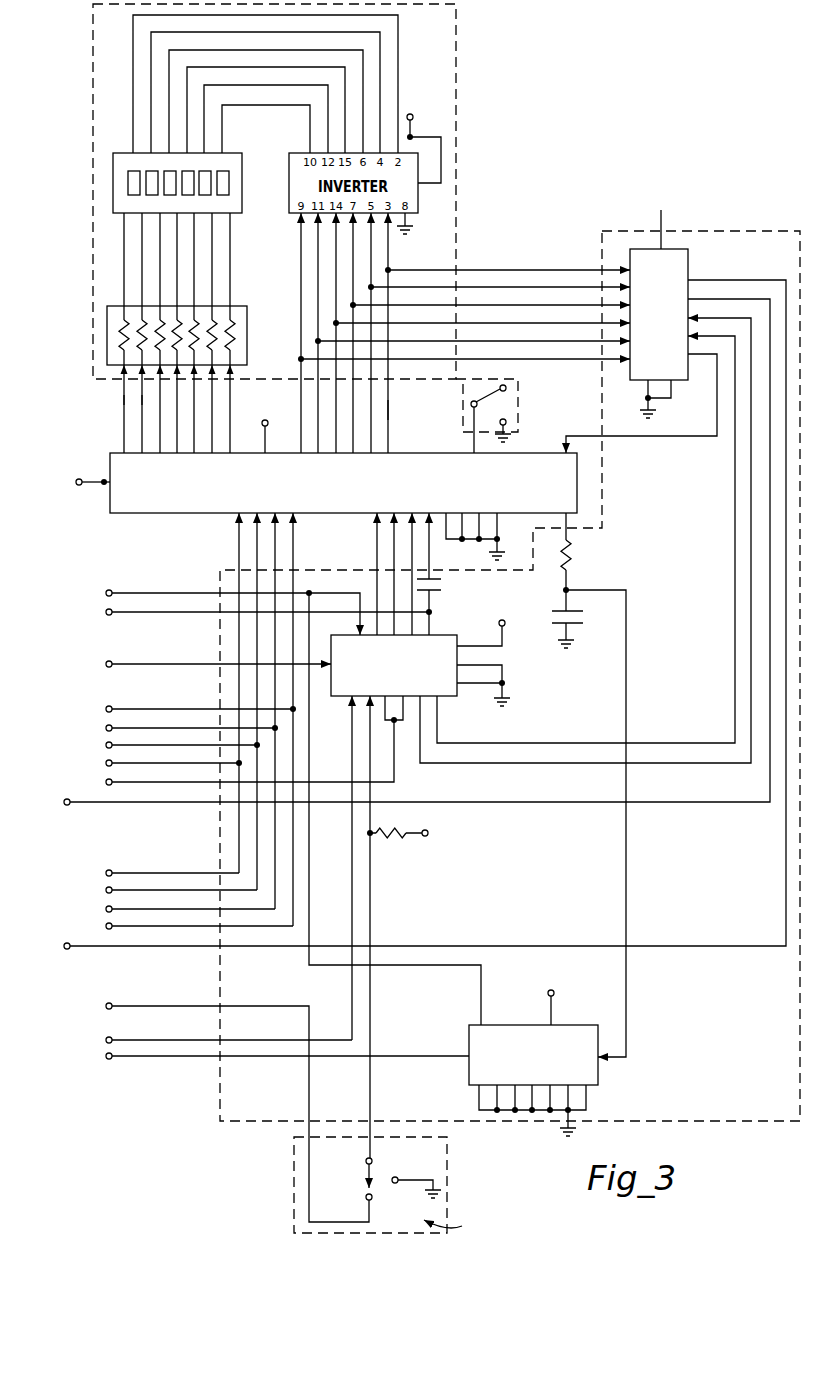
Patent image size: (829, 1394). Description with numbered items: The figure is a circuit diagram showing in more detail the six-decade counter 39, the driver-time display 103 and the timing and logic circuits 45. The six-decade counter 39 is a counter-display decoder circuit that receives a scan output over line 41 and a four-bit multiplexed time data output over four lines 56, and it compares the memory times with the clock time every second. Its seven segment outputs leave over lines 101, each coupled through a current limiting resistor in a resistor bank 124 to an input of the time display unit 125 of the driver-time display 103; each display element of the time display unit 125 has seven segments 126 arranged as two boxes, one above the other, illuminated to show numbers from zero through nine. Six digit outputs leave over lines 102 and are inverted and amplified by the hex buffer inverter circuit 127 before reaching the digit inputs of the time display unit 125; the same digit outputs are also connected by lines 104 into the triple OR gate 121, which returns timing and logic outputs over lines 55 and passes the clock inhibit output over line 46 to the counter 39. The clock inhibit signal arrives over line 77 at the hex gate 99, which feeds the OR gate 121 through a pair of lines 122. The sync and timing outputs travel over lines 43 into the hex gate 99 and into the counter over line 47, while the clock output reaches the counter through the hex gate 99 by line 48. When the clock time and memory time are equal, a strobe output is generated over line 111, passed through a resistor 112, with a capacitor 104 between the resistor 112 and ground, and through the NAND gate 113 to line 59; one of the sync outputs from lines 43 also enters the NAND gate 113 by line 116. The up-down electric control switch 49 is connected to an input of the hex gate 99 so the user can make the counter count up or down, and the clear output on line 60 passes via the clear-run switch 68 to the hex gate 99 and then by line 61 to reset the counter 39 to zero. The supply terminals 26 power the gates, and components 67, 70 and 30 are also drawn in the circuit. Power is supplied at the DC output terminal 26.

The driver-time display 103 is at (90, 151).
The time display unit 125 is at (242, 154).
The segments 126 is at (230, 187).
The hex buffer inverter circuit 127 is at (422, 215).
The DC output terminal 26 is at (410, 114).
The resistor bank 124 is at (247, 306).
The lines 101 is at (115, 408).
The six-decade counter 39 is at (107, 520).
The line 41 is at (76, 482).
The lines 102 is at (400, 412).
The up-down electric control switch 49 is at (522, 412).
The triple 3 input OR gate 121 is at (688, 249).
The line 46 is at (630, 437).
The lines / capacitor 104 is at (490, 262).
The lines 56 is at (106, 702).
The lines 55 is at (64, 797).
The lines 43 is at (106, 583).
The line 116 is at (481, 969).
The line 61 is at (377, 538).
The line 47 is at (394, 560).
The line 48 is at (413, 560).
The capacitor 67 is at (441, 591).
The line 111 is at (576, 546).
The resistor 112 is at (580, 567).
The hex gate 99 is at (444, 635).
The lines 122 is at (438, 734).
The terminal 30 is at (106, 784).
The line 77 is at (147, 1040).
The resistor 70 is at (392, 838).
The line 60 is at (176, 1006).
The clear-run switch 68 is at (448, 1143).
The NAND gate 113 is at (598, 1085).
The line 59 is at (152, 1062).
The timing and logic circuits 45 is at (218, 1122).